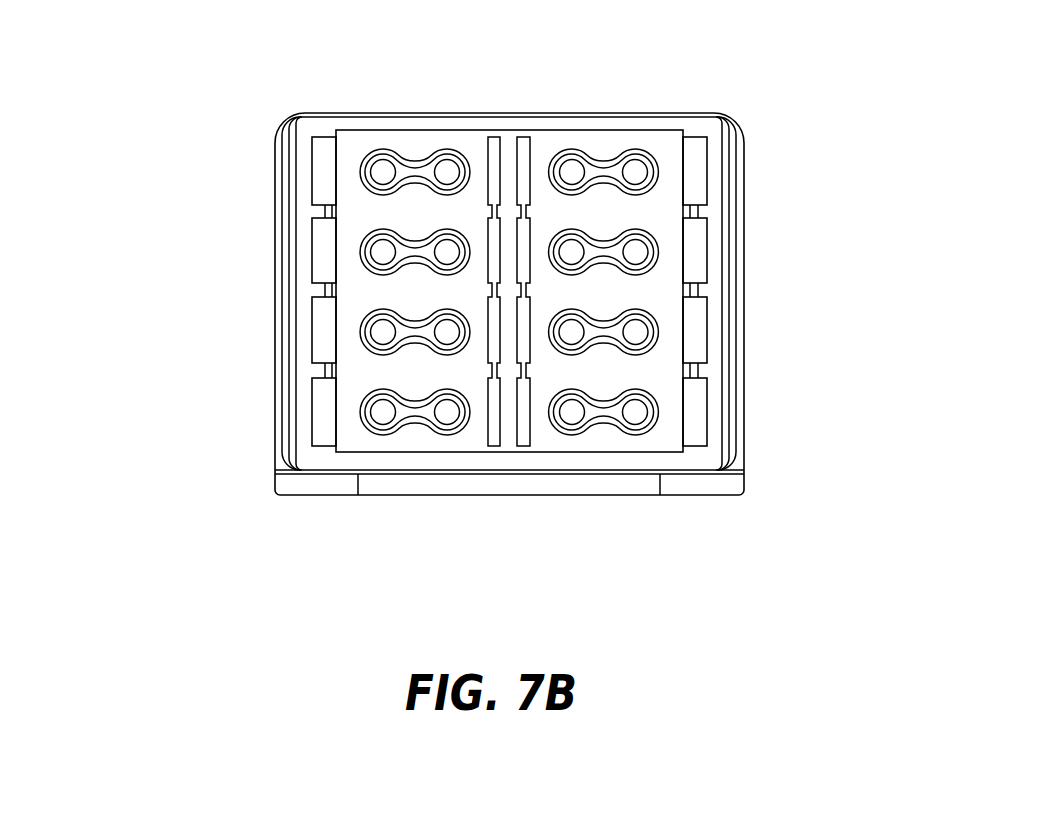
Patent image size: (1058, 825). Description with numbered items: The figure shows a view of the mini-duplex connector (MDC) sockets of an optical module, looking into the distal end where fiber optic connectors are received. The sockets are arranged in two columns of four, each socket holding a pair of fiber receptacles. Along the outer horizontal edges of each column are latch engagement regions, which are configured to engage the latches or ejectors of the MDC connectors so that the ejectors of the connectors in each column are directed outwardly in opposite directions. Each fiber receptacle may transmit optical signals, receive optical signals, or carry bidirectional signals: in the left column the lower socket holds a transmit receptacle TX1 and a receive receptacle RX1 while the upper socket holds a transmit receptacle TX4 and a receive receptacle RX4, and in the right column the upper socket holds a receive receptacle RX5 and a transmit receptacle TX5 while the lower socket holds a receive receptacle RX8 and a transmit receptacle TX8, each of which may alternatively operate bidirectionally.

The transmit fiber receptacle TX1 is at (374, 421).
The receive fiber receptacle RX1 is at (447, 423).
The transmit fiber receptacle TX4 is at (372, 162).
The receive fiber receptacle RX4 is at (447, 160).
The transmit fiber receptacle TX5 is at (648, 160).
The receive fiber receptacle RX5 is at (577, 160).
The transmit fiber receptacle TX8 is at (648, 418).
The receive fiber receptacle RX8 is at (577, 413).